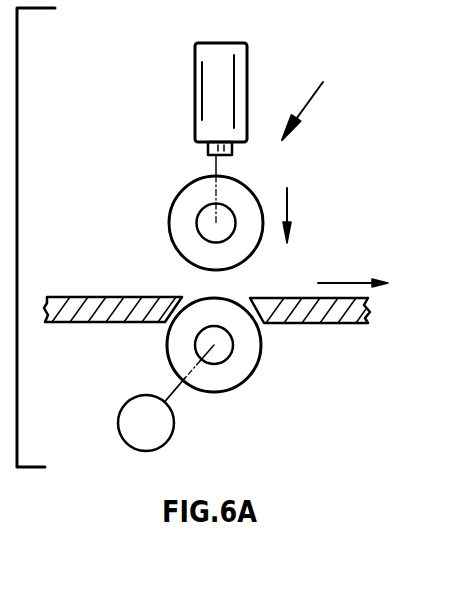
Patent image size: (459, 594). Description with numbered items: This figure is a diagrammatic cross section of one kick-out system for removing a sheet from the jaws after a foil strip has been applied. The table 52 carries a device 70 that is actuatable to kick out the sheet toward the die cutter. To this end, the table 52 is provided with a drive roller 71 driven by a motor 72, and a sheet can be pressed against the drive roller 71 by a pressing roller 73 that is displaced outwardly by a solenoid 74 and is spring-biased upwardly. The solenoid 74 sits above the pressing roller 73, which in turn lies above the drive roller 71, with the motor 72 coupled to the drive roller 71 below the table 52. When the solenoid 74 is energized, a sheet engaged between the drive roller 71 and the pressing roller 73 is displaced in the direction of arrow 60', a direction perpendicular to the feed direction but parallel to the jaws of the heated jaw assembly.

The table 52 is at (75, 295).
The arrow 60' is at (353, 252).
The device 70 is at (309, 97).
The drive roller 71 is at (247, 357).
The motor 72 is at (160, 431).
The pressing roller 73 is at (187, 216).
The solenoid 74 is at (195, 113).